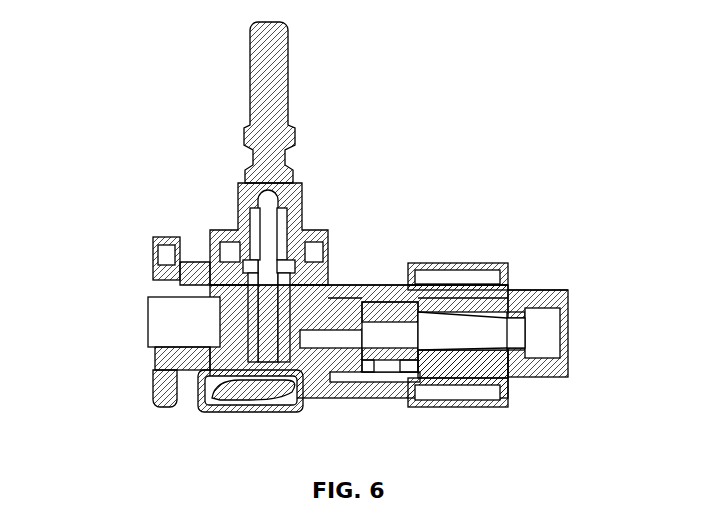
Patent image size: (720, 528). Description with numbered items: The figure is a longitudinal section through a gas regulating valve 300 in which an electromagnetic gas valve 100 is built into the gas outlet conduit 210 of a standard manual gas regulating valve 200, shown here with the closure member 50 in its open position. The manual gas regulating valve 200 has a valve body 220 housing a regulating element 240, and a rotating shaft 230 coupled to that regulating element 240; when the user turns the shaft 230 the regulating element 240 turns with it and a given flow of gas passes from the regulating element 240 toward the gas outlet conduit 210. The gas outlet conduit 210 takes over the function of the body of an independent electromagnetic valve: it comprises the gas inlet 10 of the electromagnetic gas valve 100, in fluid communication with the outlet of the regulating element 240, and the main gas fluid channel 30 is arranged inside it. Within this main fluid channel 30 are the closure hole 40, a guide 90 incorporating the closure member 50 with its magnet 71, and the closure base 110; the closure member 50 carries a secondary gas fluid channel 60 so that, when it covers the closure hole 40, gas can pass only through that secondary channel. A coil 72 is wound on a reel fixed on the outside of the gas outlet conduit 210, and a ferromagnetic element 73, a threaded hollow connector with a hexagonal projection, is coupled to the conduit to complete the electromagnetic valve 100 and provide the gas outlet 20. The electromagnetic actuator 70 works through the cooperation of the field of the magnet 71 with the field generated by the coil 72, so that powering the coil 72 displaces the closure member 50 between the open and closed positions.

The gas inlet 10 is at (240, 405).
The gas outlet 20 is at (543, 335).
The main gas fluid channel 30 is at (462, 332).
The closure hole 40 is at (460, 345).
The closure member 50 is at (399, 360).
The secondary gas fluid channel 60 is at (398, 322).
The electromagnetic actuator 70 is at (405, 207).
The magnet 71 is at (362, 374).
The coil 72 is at (457, 270).
The ferromagnetic element 73 is at (525, 288).
The guide 90 is at (410, 370).
The electromagnetic gas valve 100 is at (540, 197).
The closure base 110 is at (430, 358).
The manual gas regulating valve 200 is at (165, 172).
The gas outlet conduit 210 is at (345, 284).
The valve body 220 is at (223, 348).
The rotating shaft 230 is at (250, 80).
The regulating element 240 is at (207, 270).
The gas regulating valve 300 is at (483, 122).